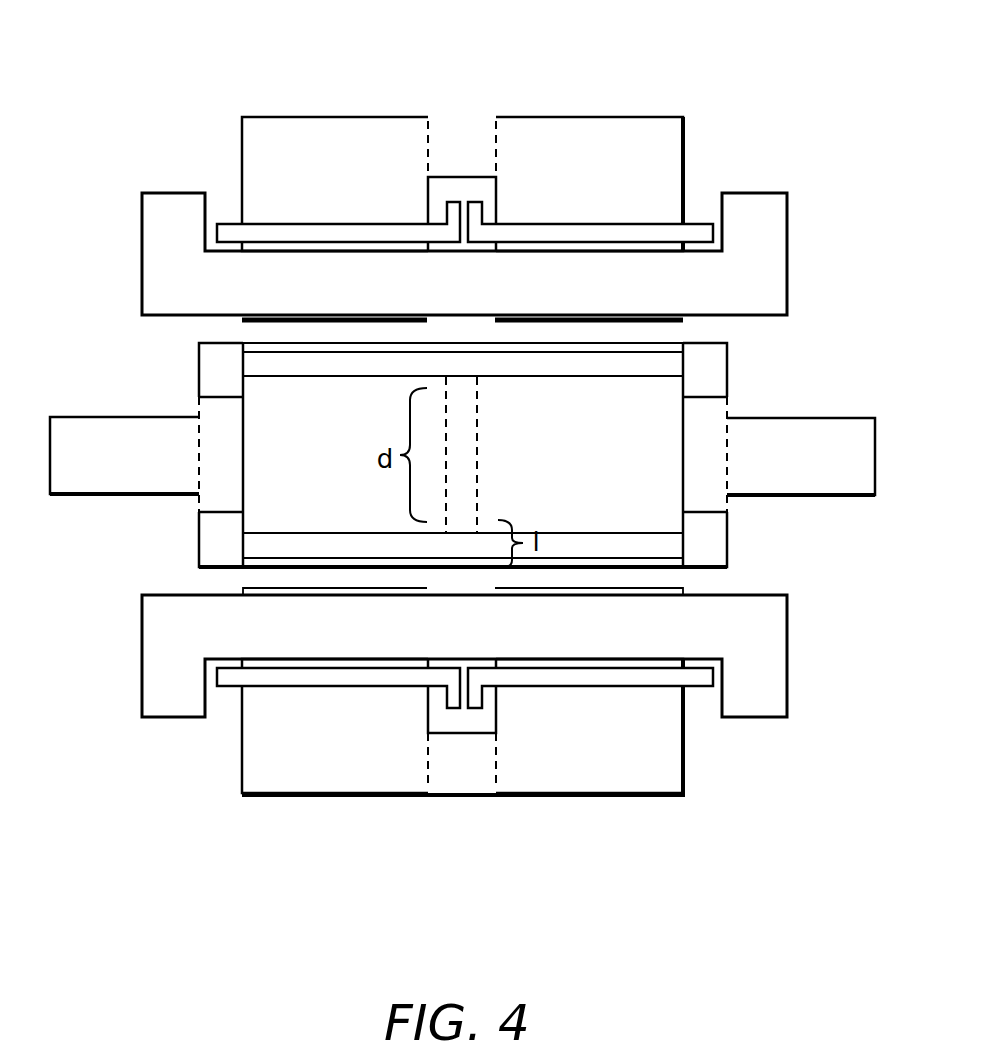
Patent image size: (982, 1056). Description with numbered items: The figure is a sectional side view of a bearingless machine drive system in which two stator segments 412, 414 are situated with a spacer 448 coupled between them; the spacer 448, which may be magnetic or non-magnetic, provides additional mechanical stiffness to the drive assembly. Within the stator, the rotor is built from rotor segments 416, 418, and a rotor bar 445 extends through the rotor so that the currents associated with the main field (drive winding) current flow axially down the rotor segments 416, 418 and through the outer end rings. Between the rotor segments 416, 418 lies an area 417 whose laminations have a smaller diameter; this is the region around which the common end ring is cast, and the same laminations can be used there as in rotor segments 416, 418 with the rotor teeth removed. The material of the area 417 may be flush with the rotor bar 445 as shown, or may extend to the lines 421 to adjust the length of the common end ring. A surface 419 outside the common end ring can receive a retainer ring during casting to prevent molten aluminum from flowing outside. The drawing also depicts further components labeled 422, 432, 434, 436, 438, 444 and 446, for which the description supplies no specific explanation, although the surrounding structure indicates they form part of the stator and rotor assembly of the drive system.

The stator segment 412 is at (323, 201).
The stator segment 414 is at (566, 203).
The rotor segment 416 is at (288, 494).
The area of smaller diameter 417 is at (467, 445).
The rotor segment 418 is at (608, 497).
The surface 419 is at (486, 571).
The lines 421 is at (458, 398).
The rotor shaft arm 422 is at (103, 472).
The stator housing 432 is at (770, 208).
The first stator coil 434 is at (228, 222).
The second stator coil 436 is at (693, 225).
The right rotor hub 438 is at (702, 532).
The left rotor hub 444 is at (207, 533).
The rotor bar 445 is at (285, 362).
The stator pole plate 446 is at (484, 324).
The spacer 448 is at (462, 167).